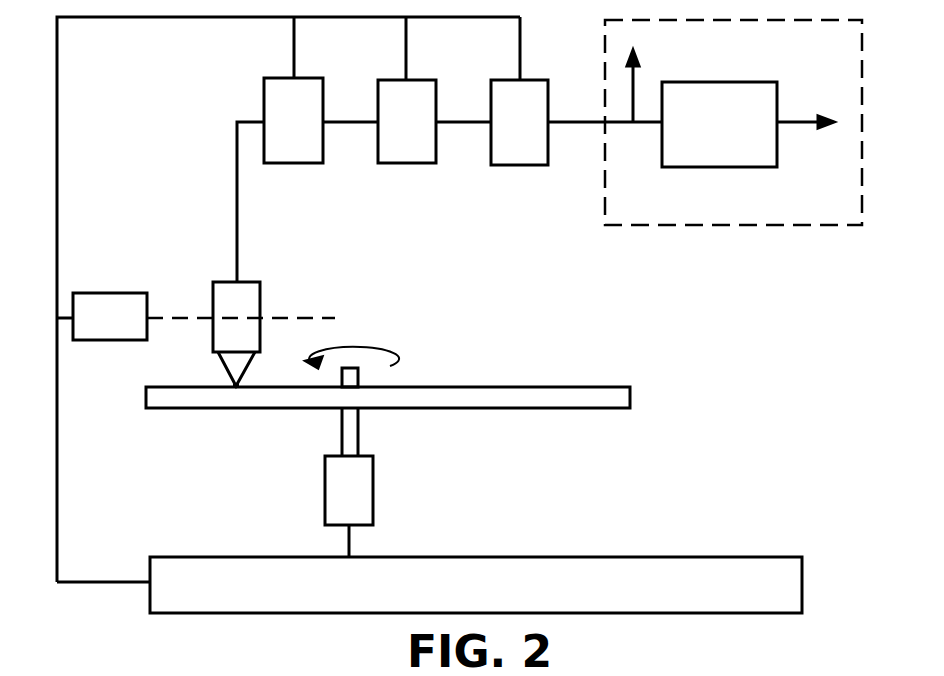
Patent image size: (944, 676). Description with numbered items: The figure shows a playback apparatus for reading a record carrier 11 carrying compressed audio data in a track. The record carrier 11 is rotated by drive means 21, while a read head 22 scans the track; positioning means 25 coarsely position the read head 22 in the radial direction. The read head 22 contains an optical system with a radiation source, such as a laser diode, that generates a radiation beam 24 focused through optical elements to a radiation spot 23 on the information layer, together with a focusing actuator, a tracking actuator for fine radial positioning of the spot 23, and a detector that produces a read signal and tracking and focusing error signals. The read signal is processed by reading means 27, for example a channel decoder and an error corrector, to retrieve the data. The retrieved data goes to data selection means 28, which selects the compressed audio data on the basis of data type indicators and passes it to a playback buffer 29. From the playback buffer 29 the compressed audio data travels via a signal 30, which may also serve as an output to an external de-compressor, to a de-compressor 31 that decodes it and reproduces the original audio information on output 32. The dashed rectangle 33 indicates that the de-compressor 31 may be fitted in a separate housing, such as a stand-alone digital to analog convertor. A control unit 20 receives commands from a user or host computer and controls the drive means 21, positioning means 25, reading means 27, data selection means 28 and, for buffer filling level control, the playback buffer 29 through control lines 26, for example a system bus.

The record carrier 11 is at (560, 393).
The control unit 20 is at (649, 555).
The drive means 21 is at (373, 480).
The read head 22 is at (260, 300).
The radiation spot 23 is at (232, 385).
The radiation beam 24 is at (248, 368).
The positioning means 25 is at (110, 300).
The control lines 26 is at (57, 177).
The reading means 27 is at (310, 83).
The data selection means 28 is at (422, 84).
The playback buffer 29 is at (535, 86).
The signal 30 is at (637, 88).
The de-compressor 31 is at (726, 90).
The output 32 is at (800, 118).
The dashed rectangle 33 is at (763, 225).